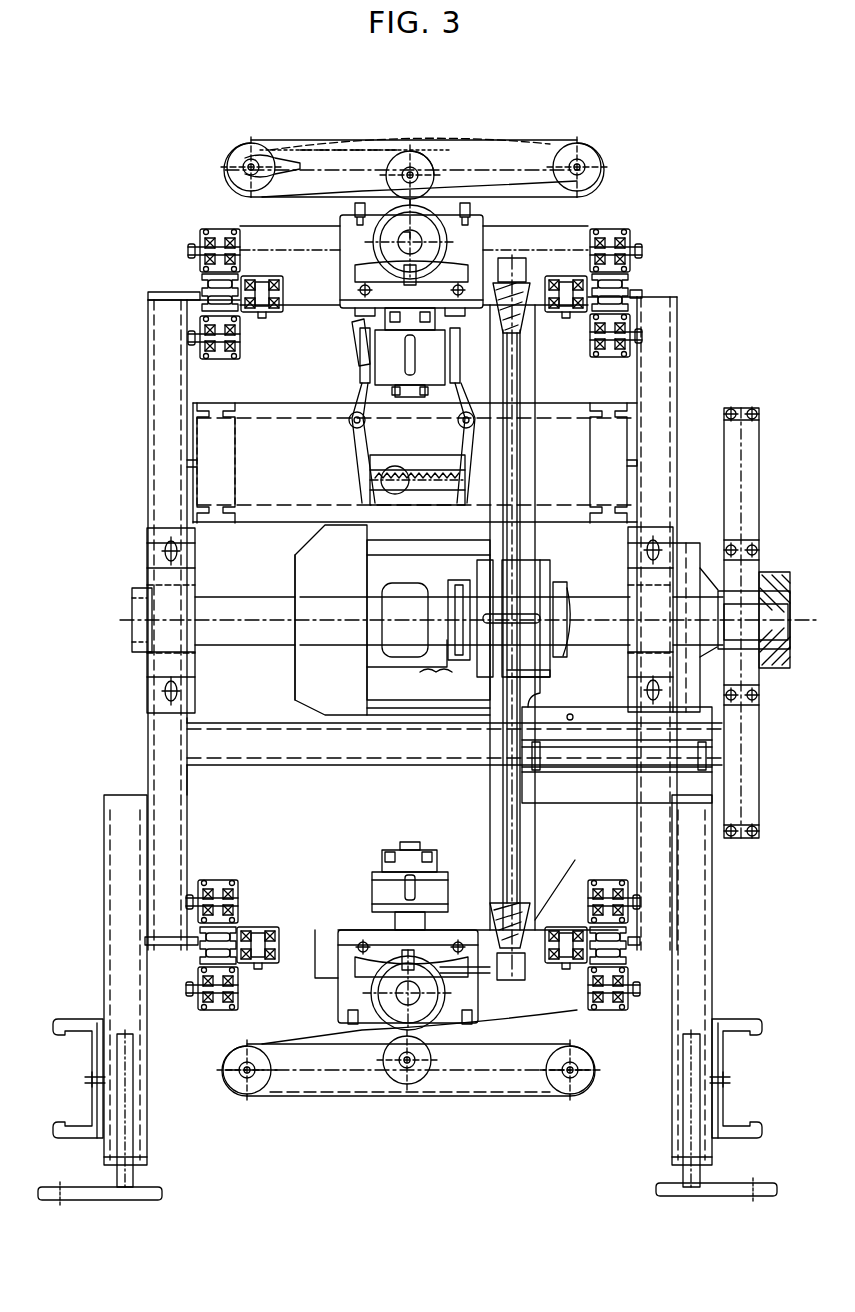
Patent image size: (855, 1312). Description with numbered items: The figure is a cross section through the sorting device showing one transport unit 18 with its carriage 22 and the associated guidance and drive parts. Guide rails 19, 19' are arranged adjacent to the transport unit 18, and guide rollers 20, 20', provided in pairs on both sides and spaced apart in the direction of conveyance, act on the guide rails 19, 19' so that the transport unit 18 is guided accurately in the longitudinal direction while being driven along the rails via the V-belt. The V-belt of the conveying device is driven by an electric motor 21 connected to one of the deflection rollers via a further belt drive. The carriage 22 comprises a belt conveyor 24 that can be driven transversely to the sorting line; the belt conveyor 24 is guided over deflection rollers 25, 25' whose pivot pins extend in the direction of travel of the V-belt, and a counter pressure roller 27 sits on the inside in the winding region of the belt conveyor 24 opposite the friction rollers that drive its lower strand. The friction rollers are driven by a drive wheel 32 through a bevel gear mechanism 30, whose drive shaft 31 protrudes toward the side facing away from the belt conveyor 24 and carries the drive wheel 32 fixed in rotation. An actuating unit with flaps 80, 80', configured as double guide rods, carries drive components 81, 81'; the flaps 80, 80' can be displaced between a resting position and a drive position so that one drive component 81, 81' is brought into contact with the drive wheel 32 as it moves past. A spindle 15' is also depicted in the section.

The spindle 15' is at (474, 617).
The transport unit 18 is at (514, 142).
The guide rail 19 is at (648, 645).
The guide rail 19' is at (178, 640).
The guide roller 20 is at (644, 563).
The guide roller 20' is at (210, 561).
The electric motor 21 is at (295, 672).
The carriage 22 is at (490, 247).
The belt conveyor 24 is at (343, 140).
The deflection roller 25 is at (601, 155).
The deflection roller 25' is at (247, 142).
The counter pressure roller 27 is at (413, 171).
The bevel gear mechanism 30 is at (350, 250).
The drive shaft 31 is at (403, 405).
The drive wheel 32 is at (352, 335).
The flap 80 is at (522, 443).
The flap 80' is at (325, 443).
The drive component 81 is at (520, 356).
The drive component 81' is at (327, 359).